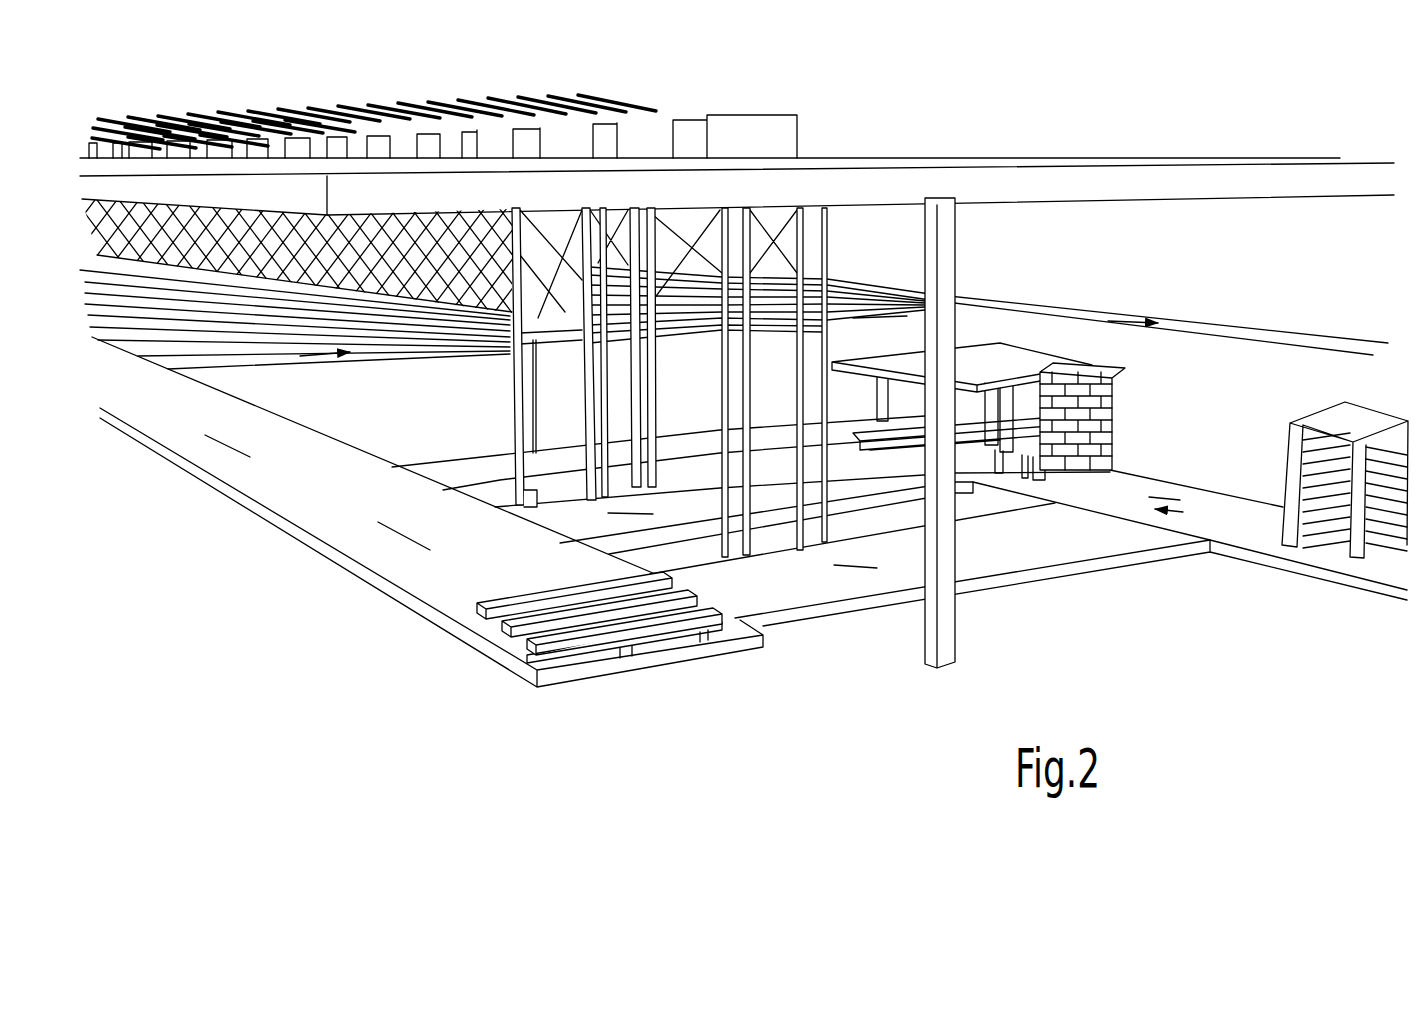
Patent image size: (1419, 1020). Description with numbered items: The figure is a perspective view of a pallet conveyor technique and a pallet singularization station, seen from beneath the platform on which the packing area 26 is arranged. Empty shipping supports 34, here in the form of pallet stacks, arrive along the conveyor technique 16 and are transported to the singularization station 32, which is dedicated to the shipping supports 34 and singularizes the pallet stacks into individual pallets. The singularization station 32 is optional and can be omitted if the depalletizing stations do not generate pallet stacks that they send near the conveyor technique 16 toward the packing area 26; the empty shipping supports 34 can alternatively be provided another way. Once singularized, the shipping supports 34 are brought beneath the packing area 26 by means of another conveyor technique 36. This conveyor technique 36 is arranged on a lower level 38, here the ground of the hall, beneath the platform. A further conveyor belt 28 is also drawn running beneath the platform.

The conveyor technique 16 is at (1307, 573).
The packing area 26 is at (1022, 143).
The conveyor belt 28 is at (1222, 326).
The singularization station 32 is at (1010, 364).
The shipping supports 34 is at (650, 636).
The conveyor technique 36 is at (316, 548).
The lower level 38 is at (897, 749).